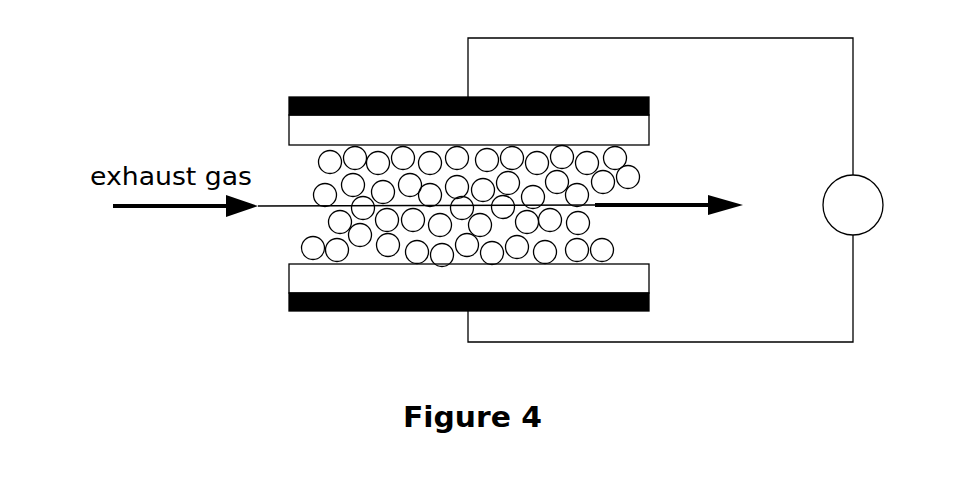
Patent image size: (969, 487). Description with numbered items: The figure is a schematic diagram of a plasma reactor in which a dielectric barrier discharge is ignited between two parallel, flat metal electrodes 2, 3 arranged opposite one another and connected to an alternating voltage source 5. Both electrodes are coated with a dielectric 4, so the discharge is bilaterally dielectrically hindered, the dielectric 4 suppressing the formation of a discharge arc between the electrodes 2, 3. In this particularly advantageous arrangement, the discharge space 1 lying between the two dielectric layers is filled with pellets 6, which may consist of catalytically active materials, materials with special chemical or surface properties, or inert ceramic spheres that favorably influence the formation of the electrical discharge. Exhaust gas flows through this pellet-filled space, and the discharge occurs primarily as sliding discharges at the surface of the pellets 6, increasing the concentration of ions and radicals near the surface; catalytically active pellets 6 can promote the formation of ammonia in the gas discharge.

The catalyst packed bed 1 is at (287, 166).
The metal electrode 2 is at (330, 98).
The metal electrode 3 is at (347, 311).
The dielectric 4 is at (630, 133).
The alternating voltage source 5 is at (853, 220).
The catalyst pellet 6 is at (327, 222).